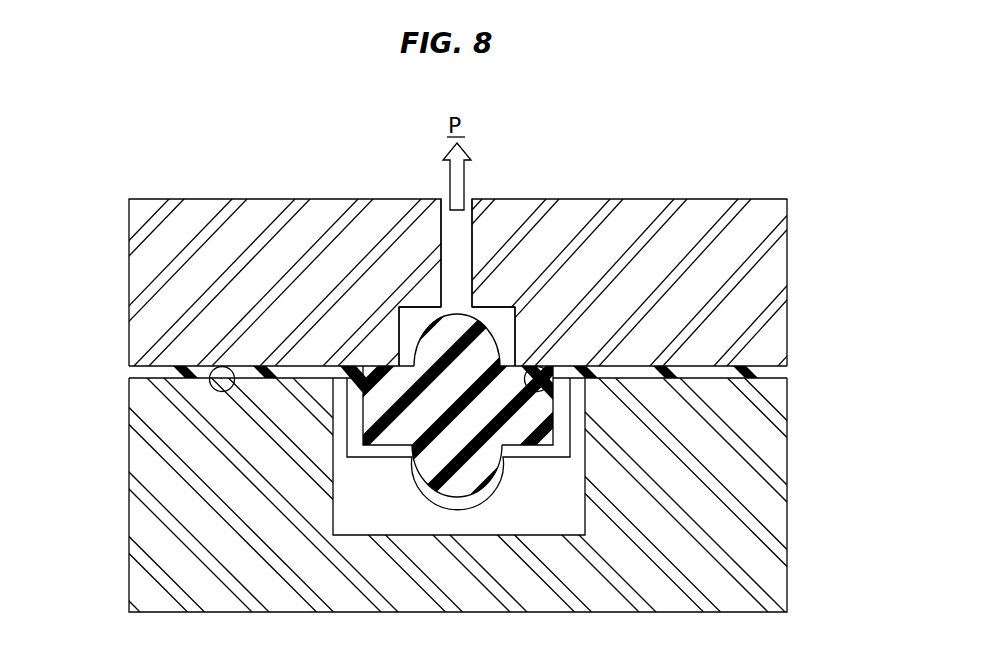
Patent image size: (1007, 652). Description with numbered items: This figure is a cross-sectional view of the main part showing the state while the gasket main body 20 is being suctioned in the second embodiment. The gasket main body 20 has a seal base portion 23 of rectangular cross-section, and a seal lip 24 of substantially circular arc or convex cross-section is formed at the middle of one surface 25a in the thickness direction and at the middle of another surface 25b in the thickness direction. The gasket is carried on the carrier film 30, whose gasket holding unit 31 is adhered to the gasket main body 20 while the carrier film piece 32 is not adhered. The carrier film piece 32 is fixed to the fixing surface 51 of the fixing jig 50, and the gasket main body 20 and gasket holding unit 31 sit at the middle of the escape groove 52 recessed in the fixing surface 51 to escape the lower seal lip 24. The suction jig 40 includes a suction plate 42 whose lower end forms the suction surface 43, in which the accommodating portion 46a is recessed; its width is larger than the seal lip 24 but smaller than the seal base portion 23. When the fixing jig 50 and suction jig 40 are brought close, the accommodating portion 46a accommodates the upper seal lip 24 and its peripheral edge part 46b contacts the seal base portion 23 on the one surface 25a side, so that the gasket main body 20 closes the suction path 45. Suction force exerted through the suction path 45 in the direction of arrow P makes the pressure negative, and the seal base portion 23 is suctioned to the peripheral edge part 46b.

The gasket main body 20 is at (462, 339).
The seal base portion 23 is at (543, 432).
The seal lip 24 is at (441, 335).
The one surface in the thickness direction 25a is at (370, 366).
The another surface in the thickness direction 25b is at (374, 452).
The carrier film 30 is at (486, 273).
The gasket holding unit 31 is at (356, 433).
The carrier film piece 32 is at (697, 367).
The suction jig 40 is at (475, 258).
The suction plate 42 is at (157, 328).
The suction surface 43 is at (209, 367).
The suction path 45 is at (455, 283).
The accommodating portion 46a is at (408, 318).
The peripheral edge part 46b is at (548, 372).
The fixing jig 50 is at (503, 495).
The fixing surface 51 is at (143, 520).
The escape groove 52 is at (575, 498).